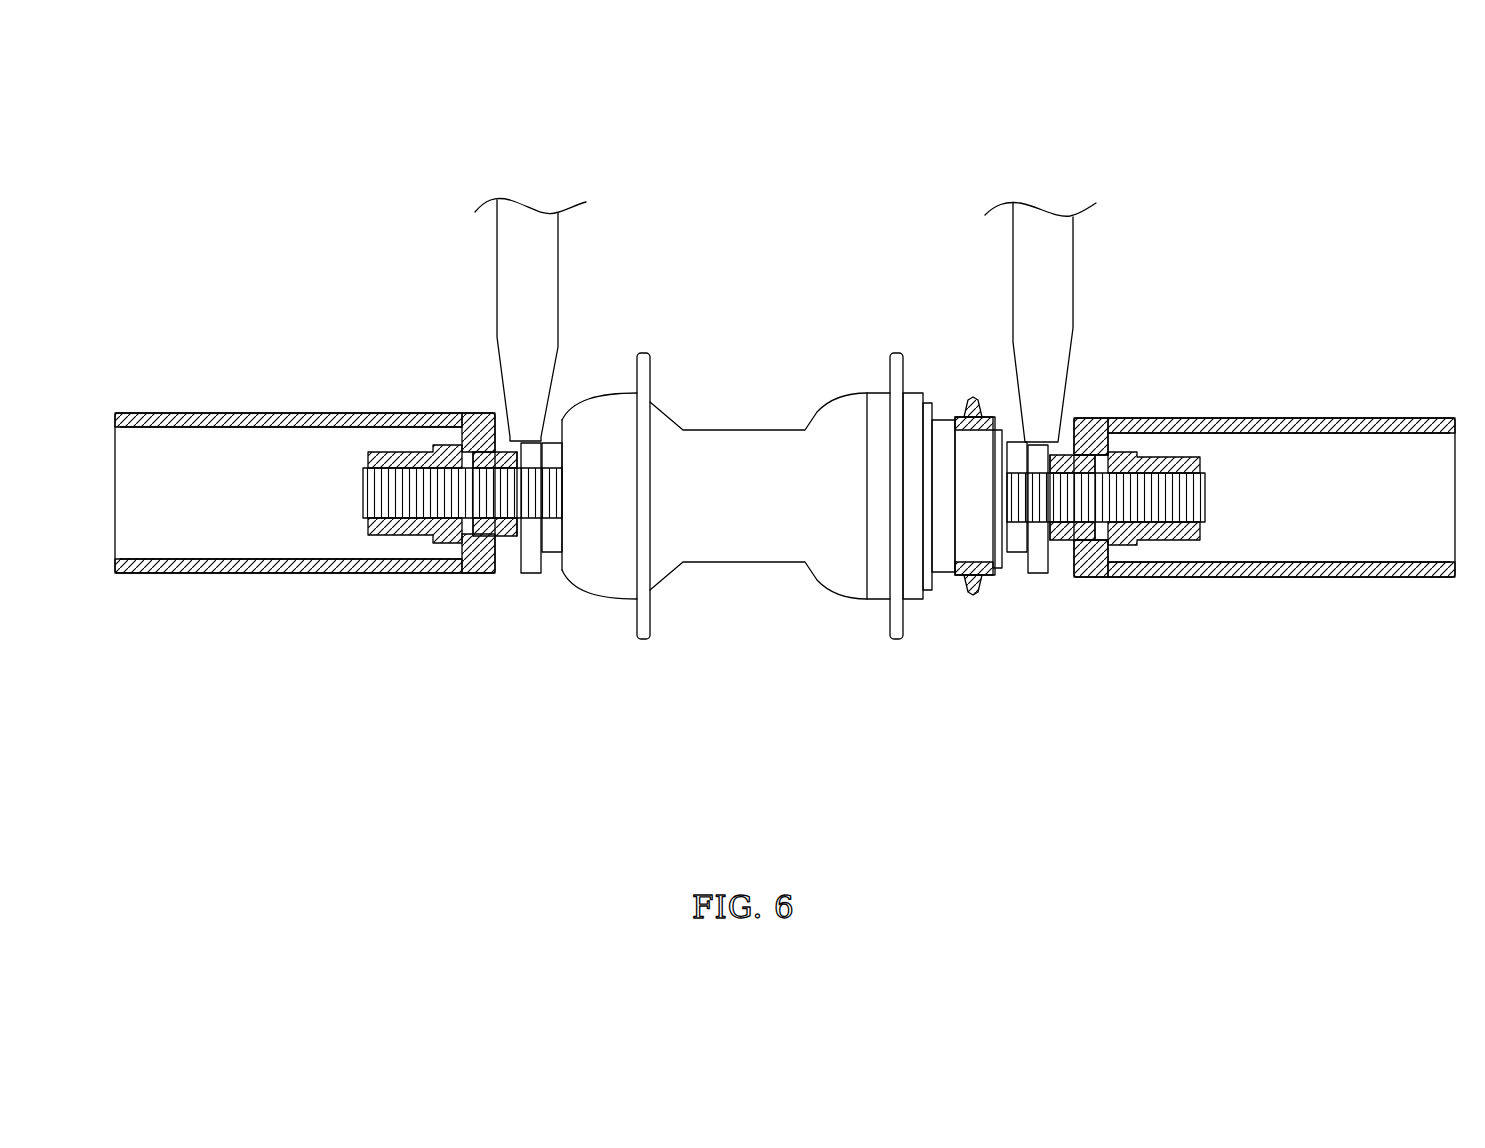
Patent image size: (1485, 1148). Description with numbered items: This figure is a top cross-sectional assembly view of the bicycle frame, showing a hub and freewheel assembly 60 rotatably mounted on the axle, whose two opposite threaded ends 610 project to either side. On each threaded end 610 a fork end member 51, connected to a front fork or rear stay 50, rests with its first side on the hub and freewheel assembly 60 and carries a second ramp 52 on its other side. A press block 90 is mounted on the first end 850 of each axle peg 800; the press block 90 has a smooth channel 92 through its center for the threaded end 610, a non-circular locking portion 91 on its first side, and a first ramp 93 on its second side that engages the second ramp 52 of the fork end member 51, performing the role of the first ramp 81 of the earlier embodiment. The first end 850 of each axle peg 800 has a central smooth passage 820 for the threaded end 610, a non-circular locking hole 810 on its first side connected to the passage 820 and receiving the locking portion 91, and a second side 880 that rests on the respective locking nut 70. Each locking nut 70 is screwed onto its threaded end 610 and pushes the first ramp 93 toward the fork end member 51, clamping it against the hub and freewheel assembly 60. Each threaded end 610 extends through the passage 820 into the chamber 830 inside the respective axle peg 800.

The front fork or rear stay 50 is at (495, 273).
The fork end member 51 is at (531, 575).
The second ramp 52 is at (522, 528).
The hub and freewheel assembly 60 is at (745, 424).
The locking nut 70 is at (397, 534).
The first ramp 81 is at (695, 494).
The press block 90 is at (505, 545).
The non-circular locking portion 91 is at (707, 625).
The smooth channel 92 is at (803, 509).
The first ramp 93 is at (695, 494).
The threaded end 610 is at (400, 491).
The axle peg 800 is at (187, 580).
The non-circular locking hole 810 is at (490, 417).
The smooth passage 820 is at (462, 573).
The chamber 830 is at (282, 538).
The first end 850 is at (1074, 577).
The second side 880 is at (1117, 433).